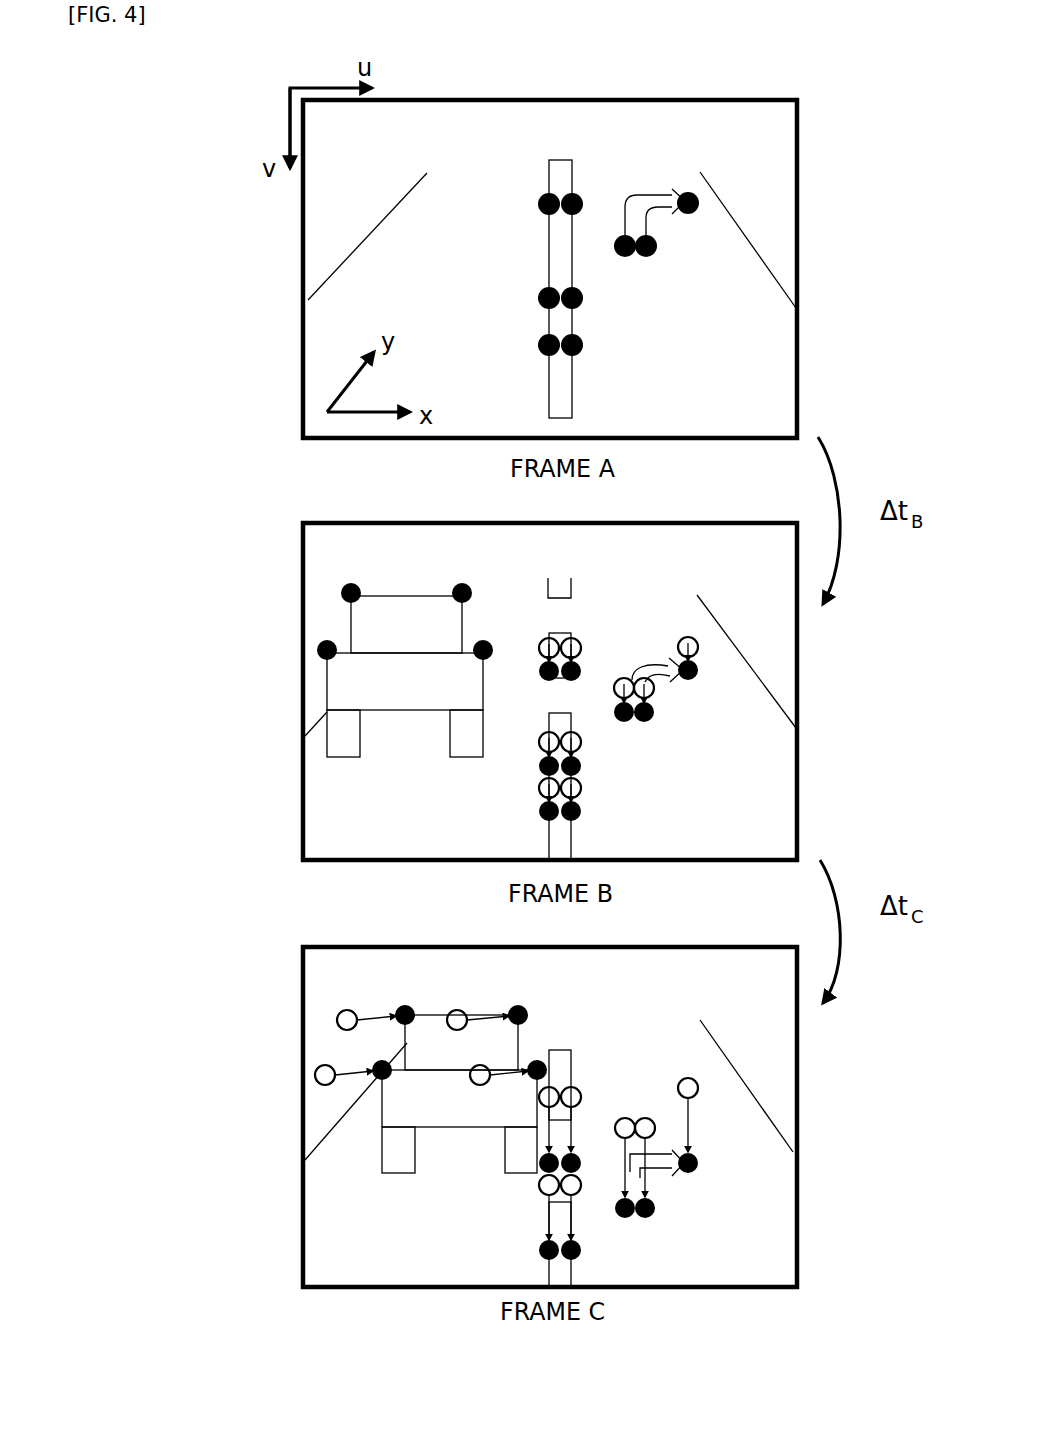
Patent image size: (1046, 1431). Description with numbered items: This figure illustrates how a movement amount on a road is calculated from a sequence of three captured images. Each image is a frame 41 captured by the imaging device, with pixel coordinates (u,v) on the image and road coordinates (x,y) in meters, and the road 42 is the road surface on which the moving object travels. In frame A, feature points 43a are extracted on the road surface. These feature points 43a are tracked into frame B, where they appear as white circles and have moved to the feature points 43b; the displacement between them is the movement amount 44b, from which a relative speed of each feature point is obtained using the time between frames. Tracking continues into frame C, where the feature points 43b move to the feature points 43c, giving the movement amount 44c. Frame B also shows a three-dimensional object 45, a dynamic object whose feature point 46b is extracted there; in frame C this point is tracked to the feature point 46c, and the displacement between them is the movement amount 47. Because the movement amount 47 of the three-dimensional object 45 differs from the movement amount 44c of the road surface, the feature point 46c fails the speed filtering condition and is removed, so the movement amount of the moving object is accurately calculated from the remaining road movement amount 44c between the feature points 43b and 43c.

The frame 41 is at (798, 118).
The road 42 is at (763, 345).
The feature points 43a is at (614, 246).
The feature points 43b is at (581, 673).
The feature points 43c is at (583, 1250).
The movement amount 44b is at (652, 692).
The movement amount 44c is at (680, 1085).
The three-dimensional object 45 is at (345, 695).
The feature point 46b is at (343, 600).
The feature point 46c is at (535, 1060).
The movement amount 47 is at (475, 1010).